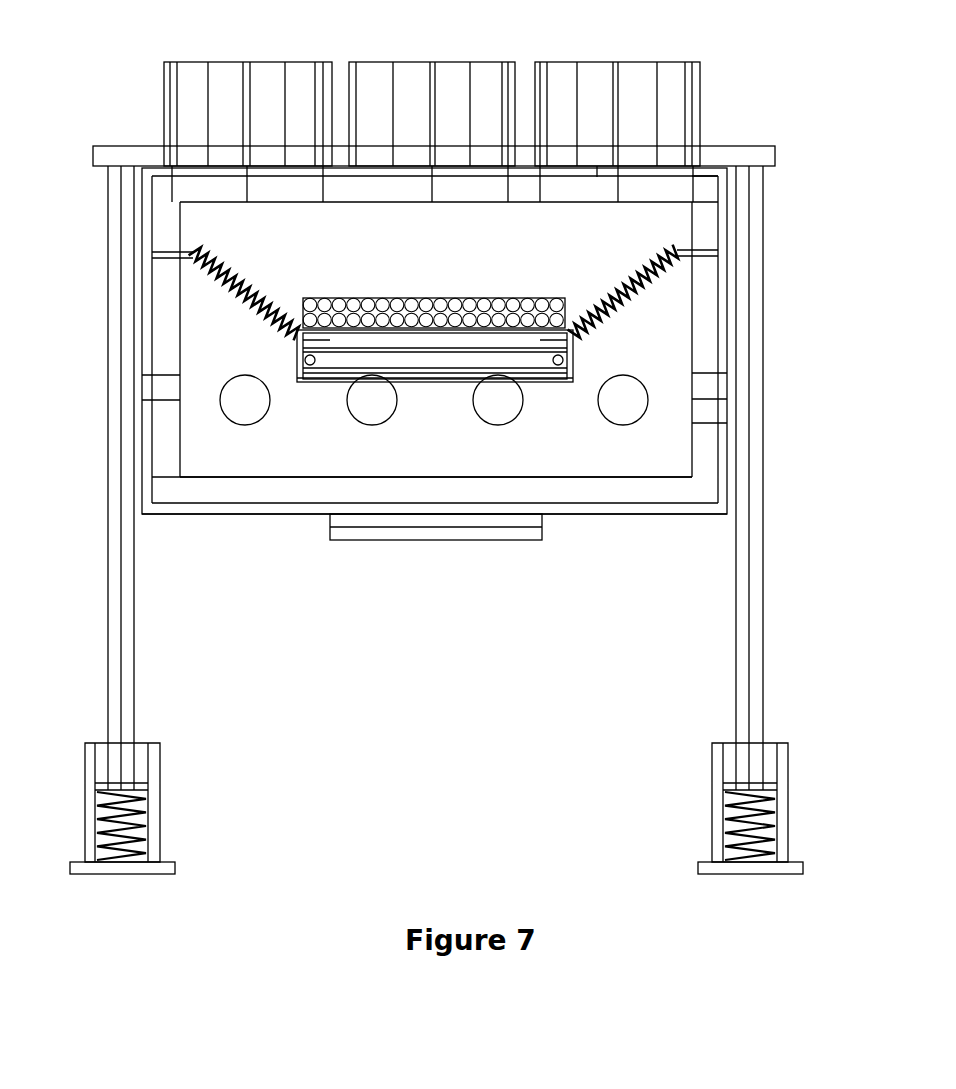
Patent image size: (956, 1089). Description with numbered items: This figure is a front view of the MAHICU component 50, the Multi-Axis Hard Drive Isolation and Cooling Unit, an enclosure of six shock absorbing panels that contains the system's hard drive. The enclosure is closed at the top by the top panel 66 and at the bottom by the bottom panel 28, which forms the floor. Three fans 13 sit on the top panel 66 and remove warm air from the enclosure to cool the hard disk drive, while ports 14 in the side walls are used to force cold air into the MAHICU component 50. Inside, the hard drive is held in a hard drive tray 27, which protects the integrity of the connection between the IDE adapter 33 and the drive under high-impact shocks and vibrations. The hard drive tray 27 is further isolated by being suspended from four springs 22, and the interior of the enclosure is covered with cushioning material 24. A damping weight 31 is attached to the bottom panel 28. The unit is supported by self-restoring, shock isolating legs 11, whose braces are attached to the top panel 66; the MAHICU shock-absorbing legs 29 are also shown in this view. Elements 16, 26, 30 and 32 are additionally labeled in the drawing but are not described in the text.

The shock absorbing legs 11 is at (110, 207).
The fans 13 is at (197, 62).
The ports 14 is at (262, 402).
The spring 16 is at (728, 822).
The springs 22 is at (262, 287).
The cushioning material 24 is at (208, 485).
The right coil spring 26 is at (688, 252).
The hard drive tray 27 is at (540, 380).
The bottom panel 28 is at (297, 510).
The MAHICU shock-absorbing legs 29 is at (436, 609).
The tray frame 30 is at (297, 357).
The damping weight 31 is at (467, 540).
The right support leg 32 is at (750, 167).
The IDE adapter 33 is at (370, 297).
The MAHICU component 50 is at (410, 103).
The top panel 66 is at (705, 170).